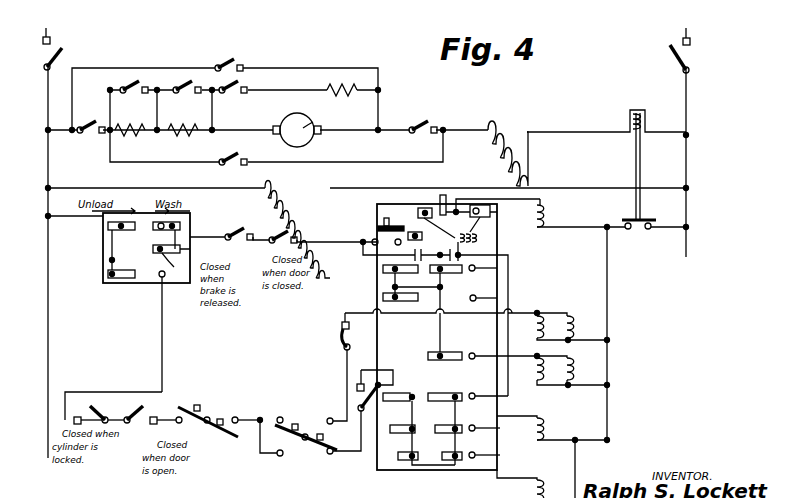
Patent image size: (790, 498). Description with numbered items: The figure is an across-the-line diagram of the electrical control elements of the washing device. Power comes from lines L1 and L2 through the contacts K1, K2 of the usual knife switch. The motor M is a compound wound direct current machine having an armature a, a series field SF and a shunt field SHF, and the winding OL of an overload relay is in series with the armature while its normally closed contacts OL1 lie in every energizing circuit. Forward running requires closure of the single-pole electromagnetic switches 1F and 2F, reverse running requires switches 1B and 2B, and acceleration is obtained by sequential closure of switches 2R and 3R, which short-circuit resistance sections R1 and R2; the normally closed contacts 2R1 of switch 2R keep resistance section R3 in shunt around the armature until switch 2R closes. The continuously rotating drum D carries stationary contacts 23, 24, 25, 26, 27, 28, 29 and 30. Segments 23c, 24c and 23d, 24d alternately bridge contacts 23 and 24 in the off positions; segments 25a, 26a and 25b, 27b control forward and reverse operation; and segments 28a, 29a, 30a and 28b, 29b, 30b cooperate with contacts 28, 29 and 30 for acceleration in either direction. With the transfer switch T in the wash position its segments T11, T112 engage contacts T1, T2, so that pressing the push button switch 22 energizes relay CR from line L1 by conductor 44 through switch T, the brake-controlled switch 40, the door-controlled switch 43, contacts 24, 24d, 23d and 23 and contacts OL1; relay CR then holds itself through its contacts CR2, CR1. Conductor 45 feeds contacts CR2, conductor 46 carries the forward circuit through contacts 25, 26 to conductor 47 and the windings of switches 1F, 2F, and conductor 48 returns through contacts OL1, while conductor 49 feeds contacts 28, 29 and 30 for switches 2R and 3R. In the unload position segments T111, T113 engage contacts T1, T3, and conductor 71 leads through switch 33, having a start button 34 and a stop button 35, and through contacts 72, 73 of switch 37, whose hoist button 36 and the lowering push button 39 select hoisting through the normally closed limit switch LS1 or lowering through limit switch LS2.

The line L1 is at (46, 28).
The knife switch contact K1 is at (60, 54).
The line L2 is at (686, 28).
The knife switch contact K2 is at (682, 55).
The electromagnetically operable switch 1B is at (236, 58).
The electromagnetically operable switch 3R is at (118, 85).
The electromagnetically operable switch 2R is at (172, 85).
The normally closed contacts 2R1 is at (238, 83).
The resistance section R3 is at (345, 83).
The electromagnetically operable switch 1F is at (343, 225).
The electromagnetically operable switch 2F is at (502, 222).
The electromagnetically operable switch 2B is at (225, 152).
The resistance section R2 is at (130, 121).
The resistance section R1 is at (183, 121).
The motor M is at (281, 121).
The armature a is at (314, 118).
The series field SF is at (508, 146).
The shunt field SHF is at (322, 182).
The overload relay winding OL is at (643, 124).
The normally closed contacts OL1 is at (646, 232).
The conductor 44 is at (75, 206).
The transfer switch T is at (103, 252).
The contact T1 is at (165, 224).
The segment T11 is at (180, 226).
The segment T111 is at (118, 232).
The segment T112 is at (180, 251).
The segment T113 is at (122, 280).
The contact T2 is at (175, 262).
The contact T3 is at (165, 278).
The conductor 71 is at (163, 328).
The switch 40 is at (240, 230).
The switch 43 is at (285, 232).
The push button switch 22 is at (370, 226).
The conductor 45 is at (352, 255).
The normally open contacts CR2 is at (377, 262).
The segment 24c is at (412, 230).
The segment 23c is at (420, 207).
The drum D is at (448, 184).
The stationary contact 23 is at (480, 204).
The segment 23d is at (493, 204).
The normally open contacts CR1 is at (458, 236).
The relay CR is at (548, 214).
The segment 24d is at (497, 230).
The conductor 46 is at (462, 256).
The stationary contact 24 is at (497, 262).
The conductor 49 is at (509, 272).
The stationary contact 25 is at (497, 268).
The segment 25a is at (380, 269).
The segment 25b is at (447, 274).
The segment 26a is at (380, 297).
The stationary contact 26 is at (497, 298).
The conductor 47 is at (520, 312).
The conductor 48 is at (607, 300).
The limit switch LS1 is at (350, 338).
The limit switch LS2 is at (405, 360).
The segment 27b is at (463, 344).
The stationary contact 27 is at (520, 352).
The segment 28a is at (398, 391).
The segment 28b is at (455, 385).
The stationary contact 28 is at (478, 392).
The segment 29a is at (404, 418).
The segment 29b is at (449, 418).
The stationary contact 29 is at (500, 428).
The segment 30a is at (400, 451).
The segment 30b is at (448, 451).
The stationary contact 30 is at (500, 455).
The switch 33 is at (232, 441).
The start button 34 is at (200, 404).
The stop button 35 is at (236, 417).
The contact 72 is at (278, 458).
The hoist button 36 is at (288, 418).
The switch 37 is at (305, 440).
The lowering push button 39 is at (320, 440).
The contact 73 is at (332, 416).